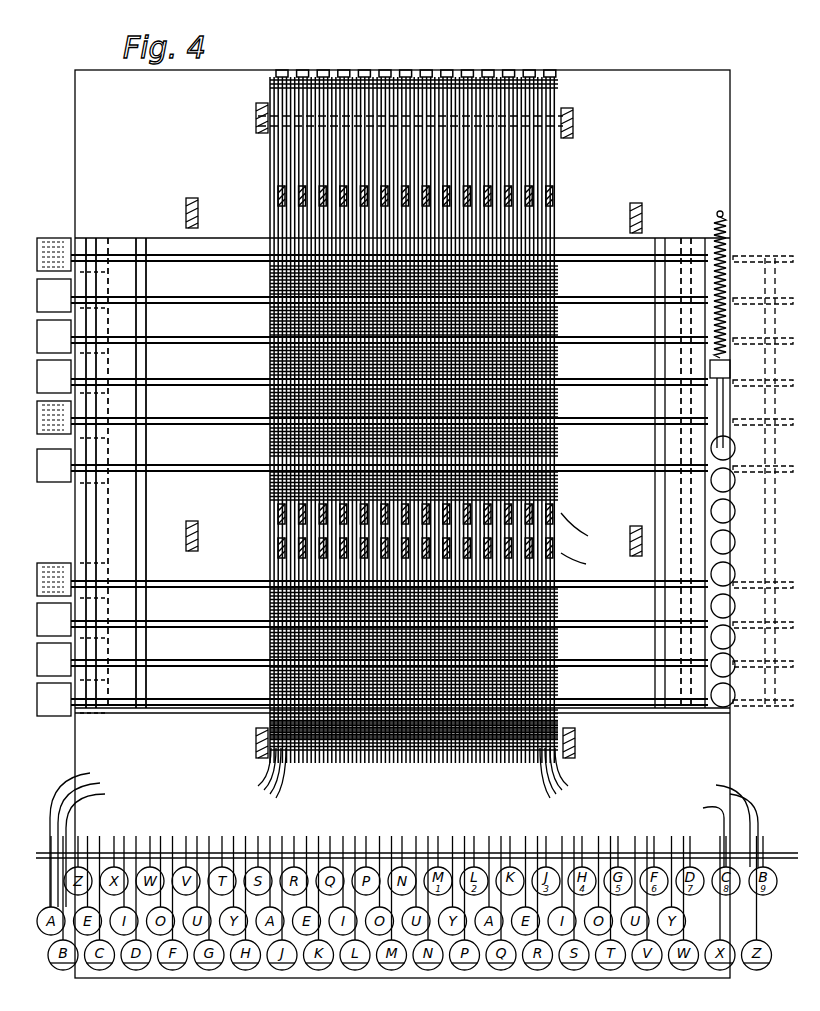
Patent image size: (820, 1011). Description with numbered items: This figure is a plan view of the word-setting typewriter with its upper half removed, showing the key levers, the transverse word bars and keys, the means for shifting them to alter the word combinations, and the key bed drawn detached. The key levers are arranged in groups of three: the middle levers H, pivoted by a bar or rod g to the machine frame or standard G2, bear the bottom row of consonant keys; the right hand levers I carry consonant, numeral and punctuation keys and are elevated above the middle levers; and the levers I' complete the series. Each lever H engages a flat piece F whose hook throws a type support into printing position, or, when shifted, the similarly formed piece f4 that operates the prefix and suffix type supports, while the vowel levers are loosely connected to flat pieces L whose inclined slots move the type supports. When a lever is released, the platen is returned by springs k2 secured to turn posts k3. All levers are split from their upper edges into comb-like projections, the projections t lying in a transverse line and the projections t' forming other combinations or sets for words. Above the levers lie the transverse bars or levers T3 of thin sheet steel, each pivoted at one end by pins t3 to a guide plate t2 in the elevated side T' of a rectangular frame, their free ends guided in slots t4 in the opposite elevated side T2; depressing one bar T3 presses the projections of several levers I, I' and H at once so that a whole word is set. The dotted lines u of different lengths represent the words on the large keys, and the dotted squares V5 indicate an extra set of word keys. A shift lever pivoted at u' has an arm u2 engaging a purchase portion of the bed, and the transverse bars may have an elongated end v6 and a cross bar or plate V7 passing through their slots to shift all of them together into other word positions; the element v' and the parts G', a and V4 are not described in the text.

The turn posts k3 is at (360, 62).
The bar or rod g is at (510, 105).
The projections t is at (434, 508).
The transverse bars or levers T3 is at (193, 690).
The projections t' is at (456, 503).
The elevated side of frame T' is at (182, 458).
The slots t4 is at (108, 690).
The elevated side of frame T2 is at (112, 473).
The extra word keys V5 is at (92, 240).
The pivot u' is at (59, 459).
The dotted lines u is at (71, 457).
The contact boxes v' is at (398, 577).
The machine frame or standard G2 is at (246, 110).
The springs k2 is at (622, 522).
The lower guides G' is at (407, 744).
The frame a is at (638, 149).
The prefix and suffix operating piece f4 is at (580, 205).
The flat piece F is at (574, 535).
The flat pieces L is at (575, 565).
The guide plate t2 is at (677, 473).
The pivot pins t3 is at (679, 473).
The arm u2 is at (718, 402).
The cross bar or plate V7 is at (737, 486).
The contact rails V4 is at (770, 735).
The elongated end v6 is at (735, 715).
The middle key levers H is at (708, 782).
The key levers I' is at (381, 840).
The right hand key levers I is at (412, 836).